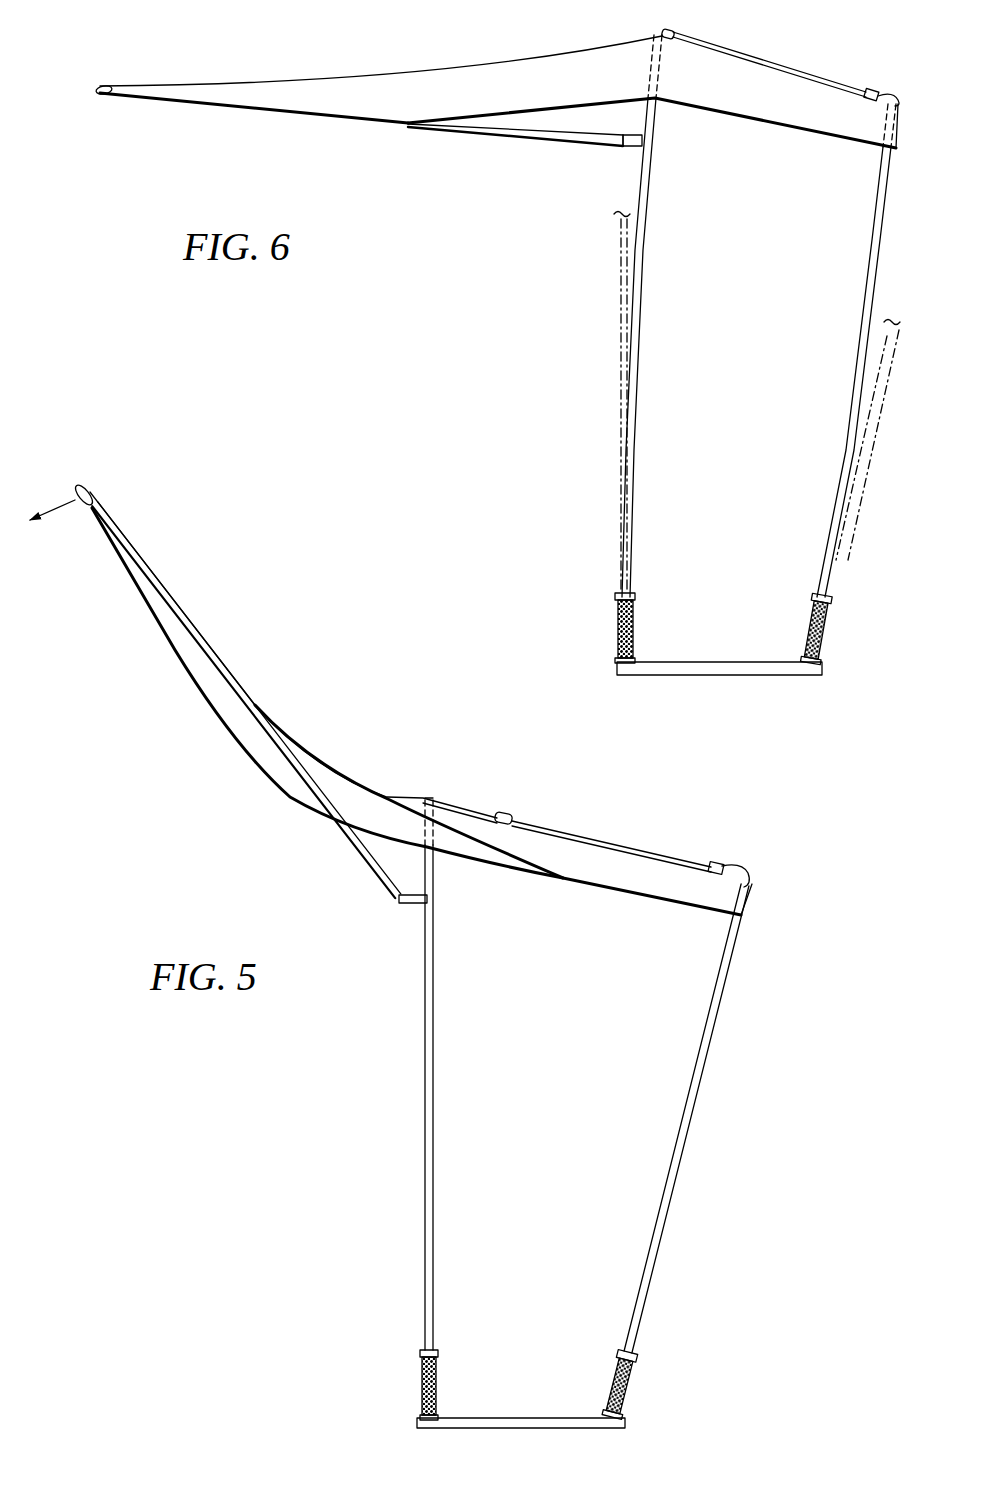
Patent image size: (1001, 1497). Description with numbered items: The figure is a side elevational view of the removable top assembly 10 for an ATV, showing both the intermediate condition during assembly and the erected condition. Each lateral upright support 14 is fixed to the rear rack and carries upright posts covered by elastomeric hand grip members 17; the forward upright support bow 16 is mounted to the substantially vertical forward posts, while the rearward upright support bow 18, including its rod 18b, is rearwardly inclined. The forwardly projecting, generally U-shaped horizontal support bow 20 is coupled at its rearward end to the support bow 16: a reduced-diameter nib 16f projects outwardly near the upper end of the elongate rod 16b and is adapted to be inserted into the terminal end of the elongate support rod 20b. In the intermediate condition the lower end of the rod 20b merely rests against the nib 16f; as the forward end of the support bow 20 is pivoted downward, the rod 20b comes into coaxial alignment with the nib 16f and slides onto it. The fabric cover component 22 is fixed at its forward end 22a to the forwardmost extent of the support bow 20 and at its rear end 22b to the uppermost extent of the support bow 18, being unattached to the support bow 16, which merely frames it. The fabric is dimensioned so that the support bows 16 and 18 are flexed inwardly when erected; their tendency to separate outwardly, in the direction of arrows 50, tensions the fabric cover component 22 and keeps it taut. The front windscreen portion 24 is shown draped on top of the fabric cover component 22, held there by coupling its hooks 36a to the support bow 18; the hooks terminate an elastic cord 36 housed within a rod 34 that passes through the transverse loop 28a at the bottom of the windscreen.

In FIG. 6, the removable top assembly 10 is at (473, 310).
In FIG. 5, the removable top assembly 10 is at (375, 673).
In FIG. 6, the lateral upright support 14 is at (733, 670).
In FIG. 6, the forward upright support bow 16 is at (640, 480).
In FIG. 5, the forward upright support bow 16 is at (393, 1200).
In FIG. 5, the elongate rod of support bow 16 16b is at (434, 997).
In FIG. 6, the nib 16f is at (638, 143).
In FIG. 5, the nib 16f is at (410, 907).
In FIG. 6, the hand grip member 17 is at (633, 610).
In FIG. 5, the hand grip member 17 is at (440, 1362).
In FIG. 6, the rearward upright support bow 18 is at (832, 463).
In FIG. 5, the rearward upright support bow 18 is at (737, 947).
In FIG. 5, the rod of support bow 18 18b is at (679, 1185).
In FIG. 6, the horizontal support bow 20 is at (407, 128).
In FIG. 5, the horizontal support bow 20 is at (264, 740).
In FIG. 6, the elongate support rod of support bow 20 20b is at (448, 132).
In FIG. 5, the elongate support rod of support bow 20 20b is at (368, 862).
In FIG. 6, the fabric cover component 22 is at (487, 99).
In FIG. 6, the forward end of fabric cover component 22a is at (97, 93).
In FIG. 5, the forward end of fabric cover component 22a is at (67, 453).
In FIG. 5, the rear end of fabric cover component 22b is at (755, 883).
In FIG. 6, the front windscreen portion 24 is at (663, 27).
In FIG. 5, the front windscreen portion 24 is at (342, 762).
In FIG. 5, the transverse loop 28a is at (500, 816).
In FIG. 6, the rod 34 is at (677, 34).
In FIG. 5, the rod 34 is at (508, 815).
In FIG. 6, the elastic cord 36 is at (778, 63).
In FIG. 5, the elastic cord 36 is at (610, 842).
In FIG. 6, the hook 36a is at (897, 98).
In FIG. 5, the hook 36a is at (727, 865).
In FIG. 6, the arrows indicating outward separation direction 50 is at (527, 275).